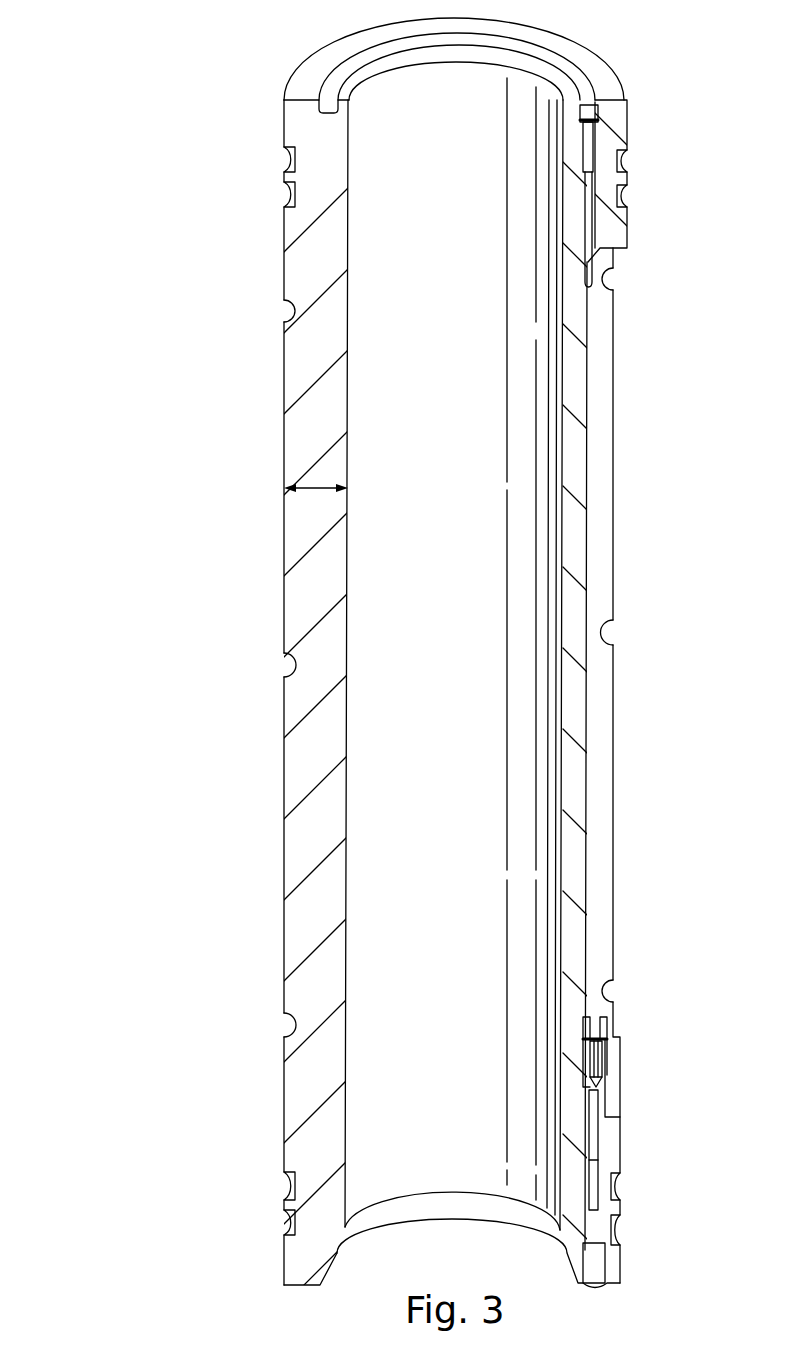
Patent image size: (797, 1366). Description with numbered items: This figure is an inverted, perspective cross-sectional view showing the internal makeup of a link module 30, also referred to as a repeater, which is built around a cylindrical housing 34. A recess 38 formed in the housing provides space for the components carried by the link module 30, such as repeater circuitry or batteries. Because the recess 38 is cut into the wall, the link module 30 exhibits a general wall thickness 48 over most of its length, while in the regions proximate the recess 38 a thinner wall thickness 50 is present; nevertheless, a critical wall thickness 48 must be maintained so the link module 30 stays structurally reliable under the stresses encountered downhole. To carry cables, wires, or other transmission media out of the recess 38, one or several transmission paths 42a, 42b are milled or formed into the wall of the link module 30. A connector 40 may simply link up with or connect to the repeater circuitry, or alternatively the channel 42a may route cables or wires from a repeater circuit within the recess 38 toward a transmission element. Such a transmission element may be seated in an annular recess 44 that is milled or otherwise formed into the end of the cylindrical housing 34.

The link module 30 is at (192, 98).
The cylindrical housing 34 is at (310, 272).
The recess 38 is at (598, 577).
The connector 40 is at (601, 1061).
The transmission path 42a is at (588, 238).
The transmission path 42b is at (596, 1138).
The annular recess 44 is at (560, 65).
The general wall thickness 48 is at (314, 488).
The thinner wall thickness 50 is at (402, 312).